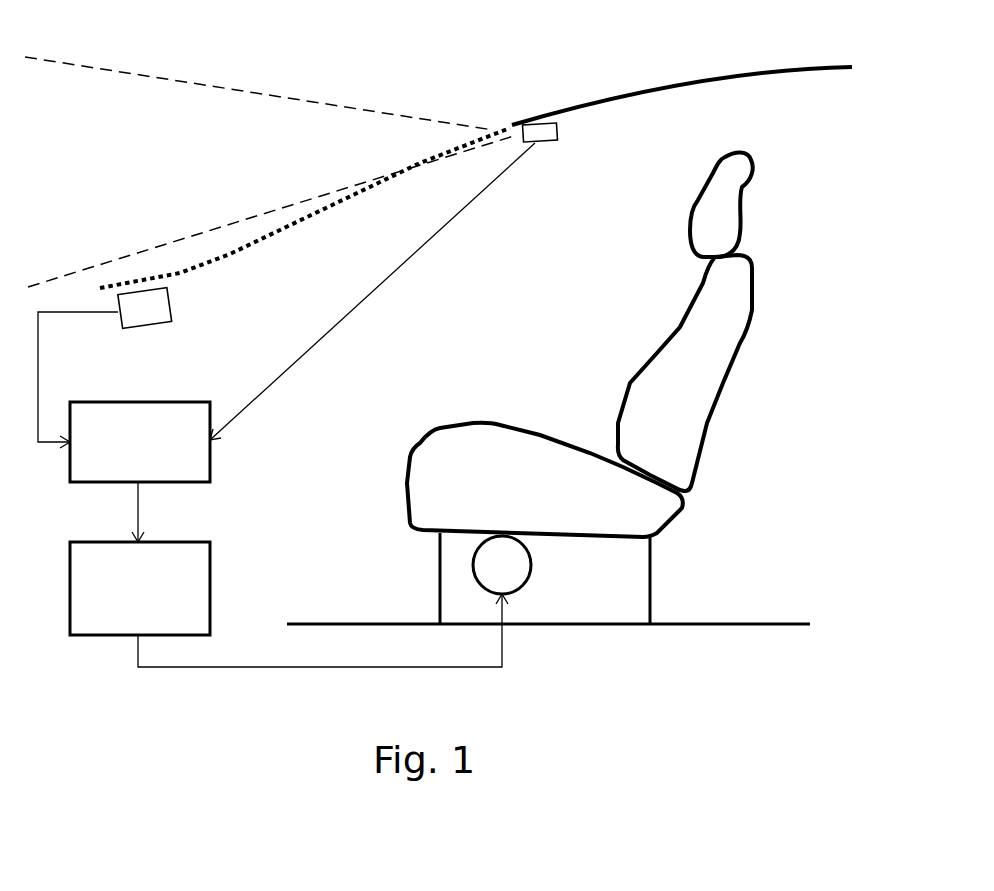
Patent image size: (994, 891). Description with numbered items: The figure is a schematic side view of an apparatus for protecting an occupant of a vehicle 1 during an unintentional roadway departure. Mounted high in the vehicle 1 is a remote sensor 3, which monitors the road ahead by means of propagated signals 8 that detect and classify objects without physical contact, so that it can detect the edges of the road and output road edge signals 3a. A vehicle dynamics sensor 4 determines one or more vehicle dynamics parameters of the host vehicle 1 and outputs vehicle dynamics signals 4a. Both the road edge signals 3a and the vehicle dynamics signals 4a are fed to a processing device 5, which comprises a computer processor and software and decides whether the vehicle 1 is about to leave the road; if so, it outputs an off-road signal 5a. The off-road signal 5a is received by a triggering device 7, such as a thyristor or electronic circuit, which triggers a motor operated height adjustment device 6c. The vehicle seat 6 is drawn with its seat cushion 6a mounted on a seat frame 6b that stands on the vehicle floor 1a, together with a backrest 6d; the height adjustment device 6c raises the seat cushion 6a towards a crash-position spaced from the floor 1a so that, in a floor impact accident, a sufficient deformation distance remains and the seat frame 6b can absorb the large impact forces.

The vehicle 1 is at (722, 68).
The floor 1a is at (742, 624).
The remote sensor 3 is at (540, 134).
The road edge signals 3a is at (372, 291).
The vehicle dynamics sensor 4 is at (138, 308).
The vehicle dynamics signals 4a is at (78, 380).
The processing device 5 is at (147, 455).
The off-road signal 5a is at (152, 512).
The vehicle seat 6 is at (617, 388).
The seat cushion 6a is at (501, 503).
The seat frame 6b is at (652, 575).
The motor operated height adjustment device 6c is at (488, 575).
The backrest 6d is at (661, 437).
The triggering device 7 is at (146, 603).
The propagated signals 8 is at (348, 107).